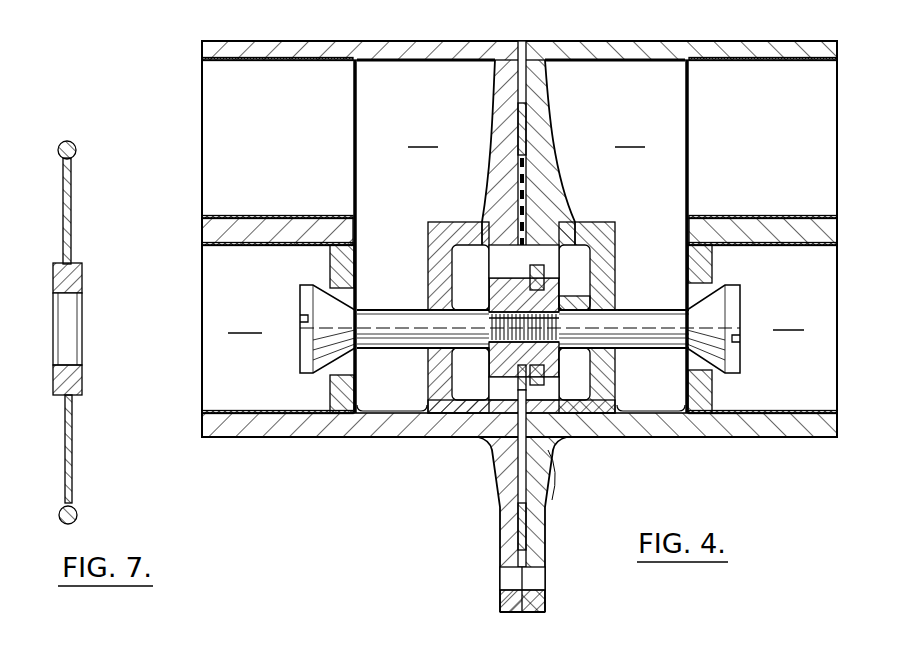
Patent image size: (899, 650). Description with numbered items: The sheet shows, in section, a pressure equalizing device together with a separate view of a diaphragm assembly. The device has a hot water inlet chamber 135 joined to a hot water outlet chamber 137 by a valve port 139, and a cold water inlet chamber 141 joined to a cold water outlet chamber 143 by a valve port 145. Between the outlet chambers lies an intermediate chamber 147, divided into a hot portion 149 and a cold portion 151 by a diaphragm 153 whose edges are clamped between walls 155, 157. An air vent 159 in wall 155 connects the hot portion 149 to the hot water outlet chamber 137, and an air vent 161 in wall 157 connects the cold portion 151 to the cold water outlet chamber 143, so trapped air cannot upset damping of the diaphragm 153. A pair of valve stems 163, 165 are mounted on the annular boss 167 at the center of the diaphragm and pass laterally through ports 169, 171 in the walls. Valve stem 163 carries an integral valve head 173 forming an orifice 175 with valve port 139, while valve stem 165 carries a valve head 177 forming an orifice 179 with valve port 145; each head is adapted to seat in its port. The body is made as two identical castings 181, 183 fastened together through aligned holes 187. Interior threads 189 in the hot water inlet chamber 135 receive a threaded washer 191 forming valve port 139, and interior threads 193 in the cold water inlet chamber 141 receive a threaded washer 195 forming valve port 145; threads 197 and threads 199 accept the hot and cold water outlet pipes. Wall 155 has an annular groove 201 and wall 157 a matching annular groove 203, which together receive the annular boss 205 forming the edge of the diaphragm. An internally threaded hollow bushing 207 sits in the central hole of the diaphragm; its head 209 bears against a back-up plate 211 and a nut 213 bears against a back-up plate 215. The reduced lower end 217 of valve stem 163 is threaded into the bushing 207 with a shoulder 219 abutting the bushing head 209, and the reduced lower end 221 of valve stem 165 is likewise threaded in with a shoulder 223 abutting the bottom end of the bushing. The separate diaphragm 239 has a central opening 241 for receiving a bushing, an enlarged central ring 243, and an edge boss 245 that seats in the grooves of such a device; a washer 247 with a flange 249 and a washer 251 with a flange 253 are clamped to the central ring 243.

In FIG. 4, the hot water inlet chamber 135 is at (190, 41).
In FIG. 4, the hot water outlet chamber 137 is at (397, 268).
In FIG. 4, the valve port 139 is at (356, 300).
In FIG. 4, the cold water inlet chamber 141 is at (503, 287).
In FIG. 4, the cold water outlet chamber 143 is at (616, 236).
In FIG. 4, the valve port 145 is at (710, 367).
In FIG. 4, the intermediate chamber 147 is at (512, 226).
In FIG. 4, the hot portion 149 is at (474, 403).
In FIG. 4, the cold portion 151 is at (546, 436).
In FIG. 4, the diaphragm 153 is at (540, 464).
In FIG. 4, the wall 155 is at (489, 190).
In FIG. 4, the wall 157 is at (541, 220).
In FIG. 4, the air vent 159 is at (432, 226).
In FIG. 4, the air vent 161 is at (606, 230).
In FIG. 4, the valve stem 163 is at (382, 336).
In FIG. 4, the valve stem 165 is at (648, 340).
In FIG. 4, the annular boss 167 is at (541, 383).
In FIG. 4, the port 169 is at (440, 380).
In FIG. 4, the port 171 is at (608, 306).
In FIG. 4, the valve head 173 is at (308, 337).
In FIG. 4, the orifice 175 is at (347, 364).
In FIG. 4, the valve head 177 is at (740, 350).
In FIG. 4, the orifice 179 is at (692, 357).
In FIG. 4, the casting 181 is at (326, 41).
In FIG. 4, the casting 183 is at (722, 41).
In FIG. 4, the aligned holes 187 is at (513, 582).
In FIG. 4, the interior threads 189 is at (278, 248).
In FIG. 4, the threaded washer 191 is at (340, 264).
In FIG. 4, the interior threads 193 is at (777, 243).
In FIG. 4, the threaded washer 195 is at (712, 260).
In FIG. 4, the threads 197 is at (288, 63).
In FIG. 4, the threads 199 is at (767, 63).
In FIG. 4, the annular groove 201 is at (514, 98).
In FIG. 4, the annular groove 203 is at (530, 548).
In FIG. 4, the annular boss 205 is at (527, 124).
In FIG. 4, the hollow bushing 207 is at (514, 378).
In FIG. 4, the head 209 is at (520, 352).
In FIG. 4, the back-up plate 211 is at (483, 219).
In FIG. 4, the nut 213 is at (542, 290).
In FIG. 4, the back-up plate 215 is at (560, 214).
In FIG. 4, the lower end 217 is at (500, 318).
In FIG. 4, the shoulder 219 is at (489, 330).
In FIG. 4, the lower end 221 is at (562, 325).
In FIG. 4, the shoulder 223 is at (588, 306).
In FIG. 7, the diaphragm 239 is at (80, 192).
In FIG. 7, the central opening 241 is at (72, 368).
In FIG. 7, the central ring 243 is at (78, 374).
In FIG. 7, the edge boss 245 is at (74, 147).
In FIG. 7, the washer 247 is at (58, 386).
In FIG. 7, the flange 249 is at (68, 392).
In FIG. 7, the washer 251 is at (78, 283).
In FIG. 7, the flange 253 is at (72, 267).